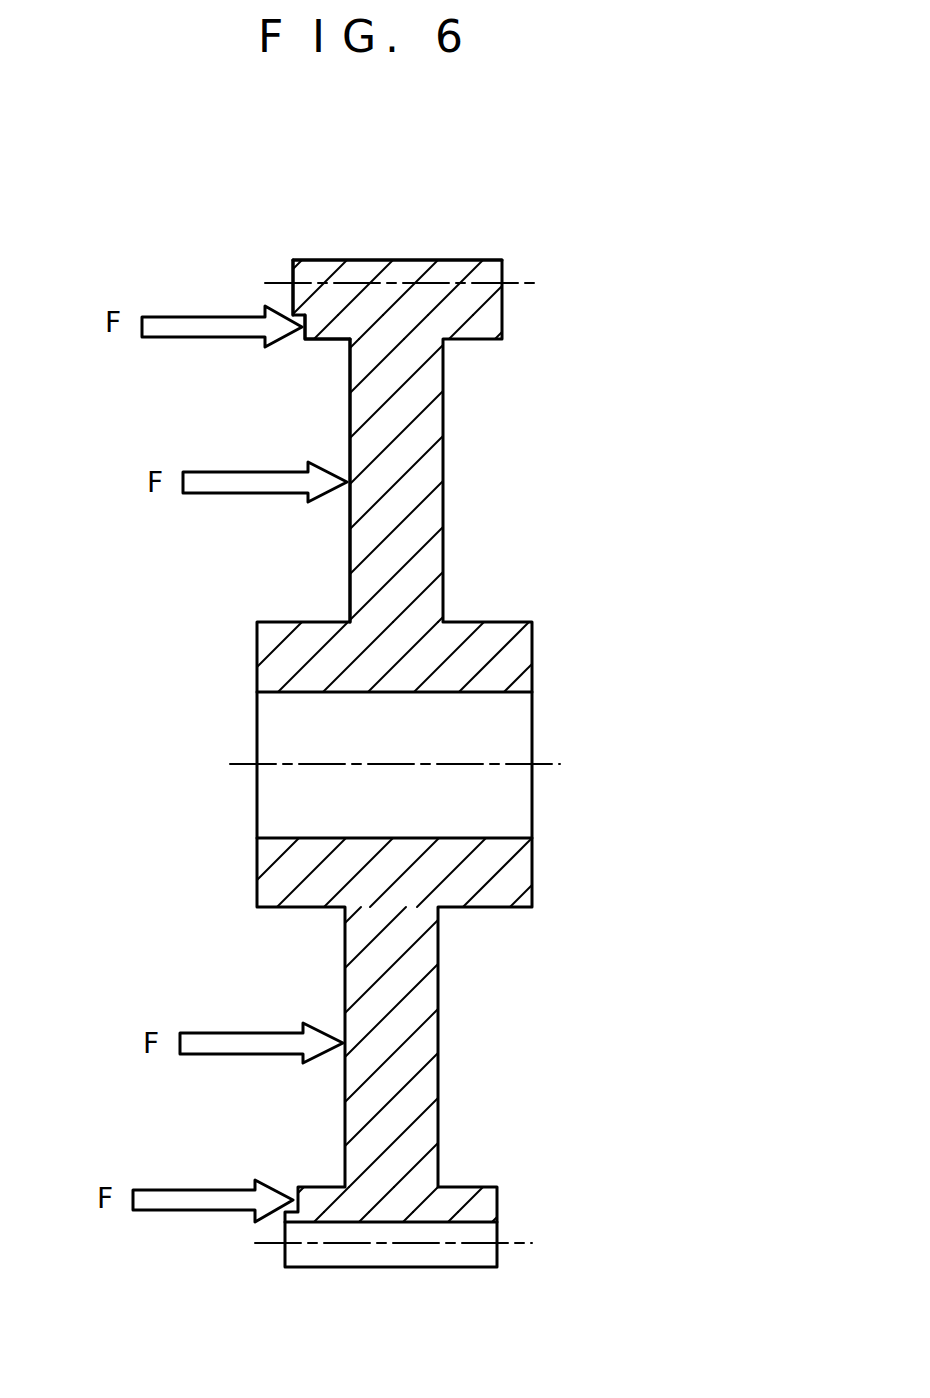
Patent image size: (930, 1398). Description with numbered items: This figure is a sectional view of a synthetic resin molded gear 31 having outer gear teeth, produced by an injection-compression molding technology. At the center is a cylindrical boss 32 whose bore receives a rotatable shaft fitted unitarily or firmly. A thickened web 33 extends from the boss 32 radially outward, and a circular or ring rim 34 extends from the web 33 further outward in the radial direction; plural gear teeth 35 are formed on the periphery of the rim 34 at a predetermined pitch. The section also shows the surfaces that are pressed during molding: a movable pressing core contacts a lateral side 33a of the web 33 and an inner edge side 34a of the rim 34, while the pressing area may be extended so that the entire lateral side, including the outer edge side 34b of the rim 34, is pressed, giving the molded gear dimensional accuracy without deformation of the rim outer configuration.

The synthetic resin molded gear 31 is at (405, 1372).
The cylindrical boss 32 is at (517, 660).
The web 33 is at (425, 488).
The lateral side of the web 33a is at (350, 545).
The rim 34 is at (452, 325).
The inner edge side of the rim 34a is at (302, 342).
The outer edge side of the rim 34b is at (293, 295).
The gear teeth 35 is at (422, 270).